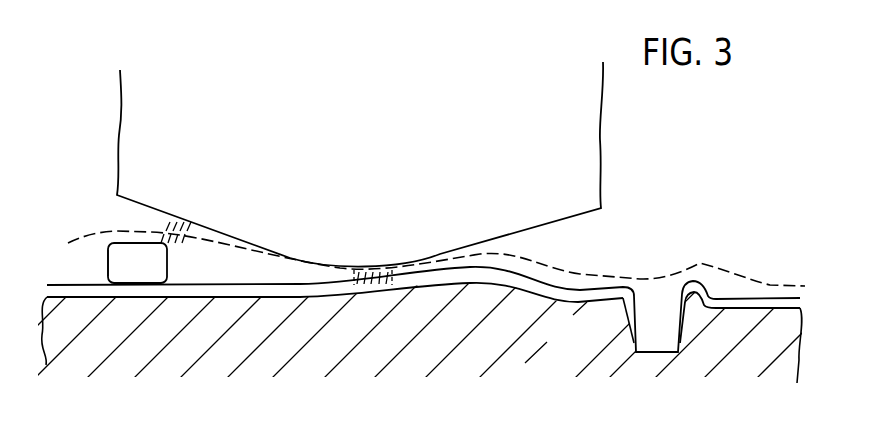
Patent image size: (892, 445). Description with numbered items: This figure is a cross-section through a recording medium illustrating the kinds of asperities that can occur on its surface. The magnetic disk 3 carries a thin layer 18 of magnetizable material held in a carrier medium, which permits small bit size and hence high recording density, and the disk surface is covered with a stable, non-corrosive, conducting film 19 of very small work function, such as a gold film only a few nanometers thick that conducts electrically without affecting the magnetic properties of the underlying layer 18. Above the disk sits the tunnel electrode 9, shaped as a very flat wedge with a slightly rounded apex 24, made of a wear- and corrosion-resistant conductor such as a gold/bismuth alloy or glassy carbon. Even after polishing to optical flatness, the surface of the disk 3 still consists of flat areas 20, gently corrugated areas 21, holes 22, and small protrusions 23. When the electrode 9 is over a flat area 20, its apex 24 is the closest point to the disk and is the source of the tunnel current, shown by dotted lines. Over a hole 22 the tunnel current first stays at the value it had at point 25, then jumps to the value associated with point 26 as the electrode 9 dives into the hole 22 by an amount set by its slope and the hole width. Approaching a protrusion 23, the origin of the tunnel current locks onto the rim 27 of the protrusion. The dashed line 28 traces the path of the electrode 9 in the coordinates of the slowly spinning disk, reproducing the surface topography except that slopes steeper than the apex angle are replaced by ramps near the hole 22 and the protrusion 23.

The magnetic disk 3 is at (261, 357).
The electrode 9 is at (272, 112).
The layer of magnetizable material 18 is at (505, 278).
The conducting film 19 is at (537, 271).
The flat area 20 is at (226, 285).
The gently corrugated area 21 is at (577, 295).
The hole 22 is at (657, 316).
The protrusion 23 is at (108, 263).
The apex 24 is at (370, 270).
The point 25 is at (702, 281).
The point 26 is at (636, 288).
The rim 27 is at (160, 247).
The dashed line 28 is at (96, 233).